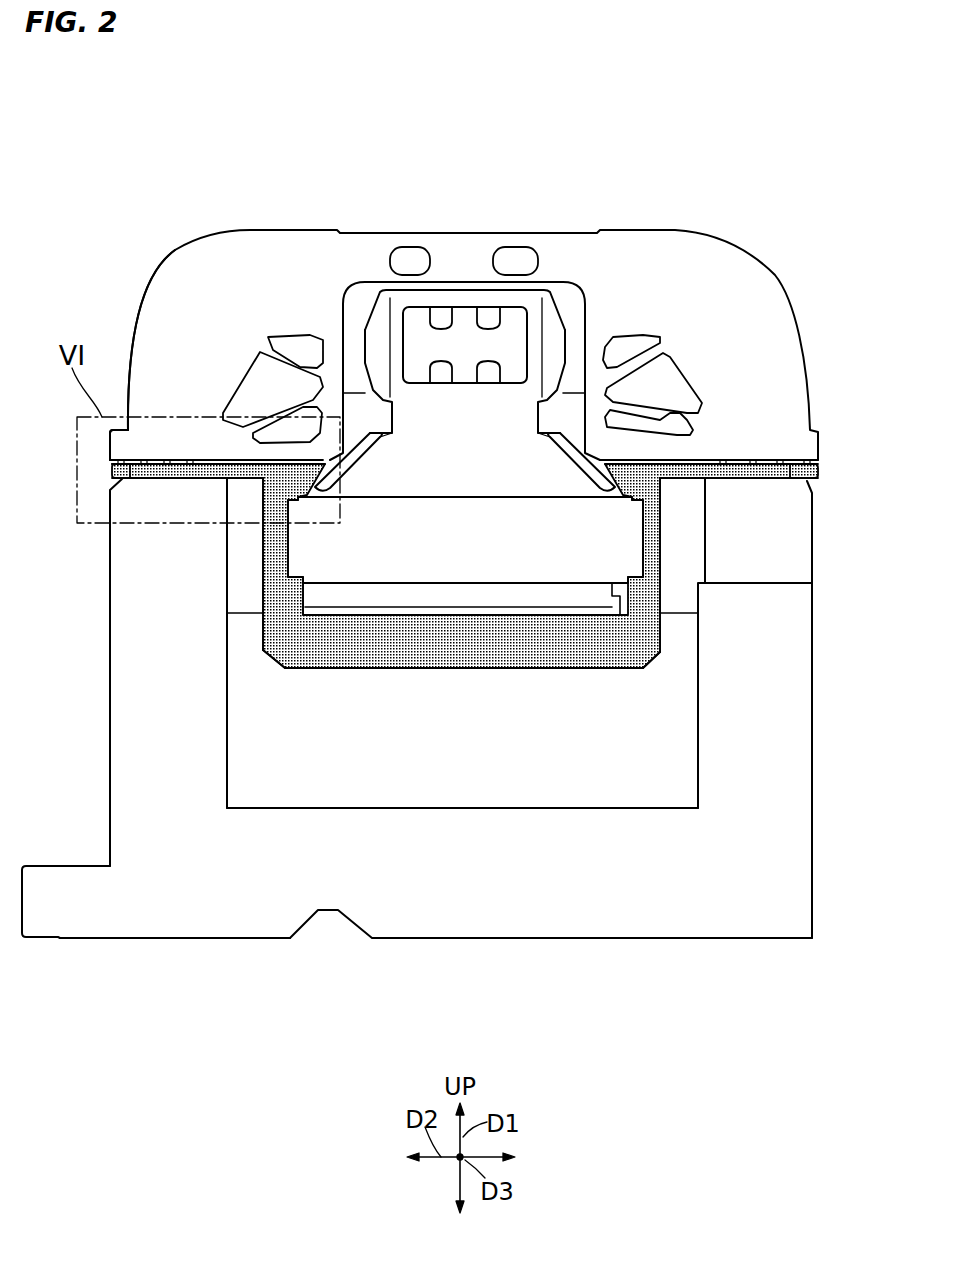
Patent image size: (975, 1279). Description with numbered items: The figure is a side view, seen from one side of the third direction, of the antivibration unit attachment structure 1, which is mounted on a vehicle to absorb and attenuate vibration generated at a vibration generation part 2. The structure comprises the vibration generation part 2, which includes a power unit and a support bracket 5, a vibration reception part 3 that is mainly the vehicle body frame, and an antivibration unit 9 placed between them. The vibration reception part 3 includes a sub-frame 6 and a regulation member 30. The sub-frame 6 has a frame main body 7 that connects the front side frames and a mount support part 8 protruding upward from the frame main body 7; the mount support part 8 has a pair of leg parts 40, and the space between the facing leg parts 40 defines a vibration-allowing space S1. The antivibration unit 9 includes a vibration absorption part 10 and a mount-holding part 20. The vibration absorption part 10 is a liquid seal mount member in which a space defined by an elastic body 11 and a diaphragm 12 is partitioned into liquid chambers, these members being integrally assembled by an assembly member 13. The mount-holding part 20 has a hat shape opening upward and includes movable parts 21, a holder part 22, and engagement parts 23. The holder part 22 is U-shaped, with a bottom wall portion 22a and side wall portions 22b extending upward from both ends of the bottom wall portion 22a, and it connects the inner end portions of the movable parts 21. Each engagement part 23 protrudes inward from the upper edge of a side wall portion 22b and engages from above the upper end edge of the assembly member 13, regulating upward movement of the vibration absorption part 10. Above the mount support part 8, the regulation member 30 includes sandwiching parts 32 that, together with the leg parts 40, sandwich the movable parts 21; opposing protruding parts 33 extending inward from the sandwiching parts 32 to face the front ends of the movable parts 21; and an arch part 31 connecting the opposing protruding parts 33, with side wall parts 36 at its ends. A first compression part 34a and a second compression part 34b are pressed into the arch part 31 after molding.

The antivibration unit attachment structure 1 is at (750, 86).
The vibration generation part 2 is at (535, 298).
The vibration reception part 3 is at (629, 962).
The support bracket 5 is at (463, 337).
The sub-frame 6 is at (417, 708).
The frame main body 7 is at (812, 883).
The mount support part 8 is at (798, 742).
The antivibration unit 9 is at (240, 630).
The vibration absorption part 10 is at (584, 321).
The elastic body 11 is at (480, 460).
The diaphragm 12 is at (420, 593).
The assembly member 13 is at (485, 550).
The mount-holding part 20 is at (313, 685).
The movable part 21 is at (170, 480).
The holder part 22 is at (648, 757).
The bottom wall portion 22a is at (520, 650).
The side wall portion 22b is at (277, 568).
The engagement part 23 is at (632, 477).
The regulation member 30 is at (633, 224).
The arch part 31 is at (453, 253).
The sandwiching part 32 is at (190, 445).
The opposing protruding part 33 is at (310, 450).
The first compression part 34a is at (307, 432).
The second compression part 34b is at (405, 246).
The side wall part 36 is at (167, 302).
The leg part 40 is at (178, 757).
The vibration-allowing space S1 is at (364, 762).